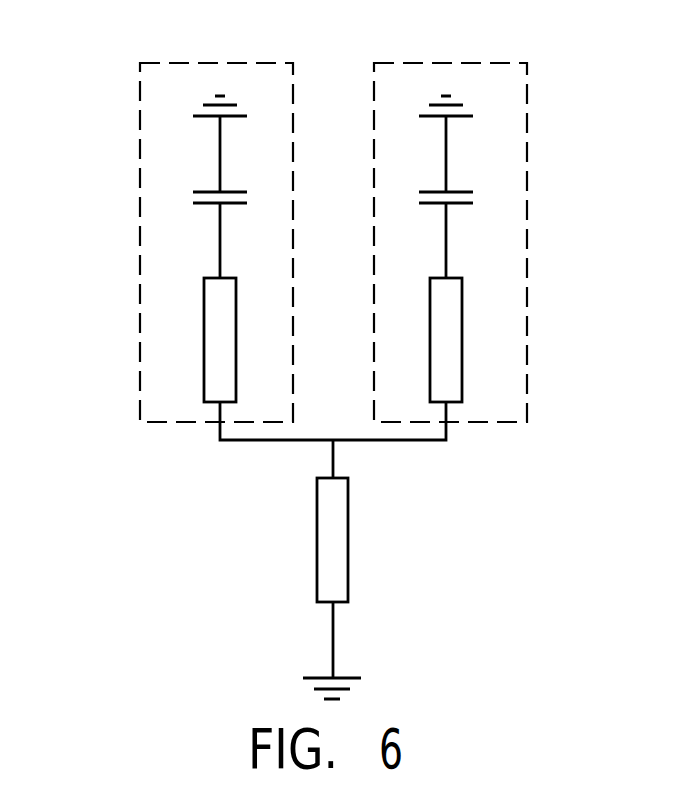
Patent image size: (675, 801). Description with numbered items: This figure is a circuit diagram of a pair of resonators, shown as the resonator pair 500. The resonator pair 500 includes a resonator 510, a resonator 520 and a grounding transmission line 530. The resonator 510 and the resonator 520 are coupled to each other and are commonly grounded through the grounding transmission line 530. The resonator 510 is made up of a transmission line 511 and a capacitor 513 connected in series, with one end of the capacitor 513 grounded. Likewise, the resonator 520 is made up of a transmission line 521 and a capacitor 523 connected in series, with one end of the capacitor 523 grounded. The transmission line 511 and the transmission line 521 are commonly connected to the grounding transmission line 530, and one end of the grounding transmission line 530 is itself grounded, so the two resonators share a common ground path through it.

The resonator pair 500 is at (612, 519).
The resonator 510 is at (140, 63).
The transmission line 511 is at (204, 340).
The capacitor 513 is at (207, 203).
The resonator 520 is at (527, 63).
The transmission line 521 is at (462, 338).
The capacitor 523 is at (458, 203).
The grounding transmission line 530 is at (348, 538).